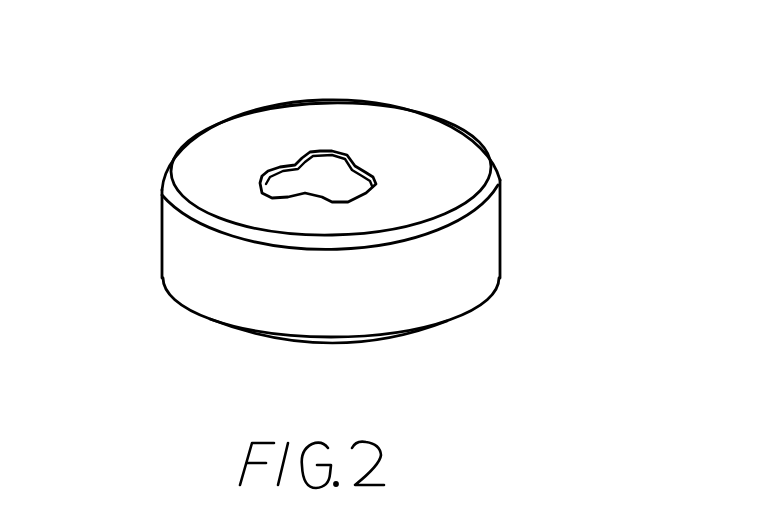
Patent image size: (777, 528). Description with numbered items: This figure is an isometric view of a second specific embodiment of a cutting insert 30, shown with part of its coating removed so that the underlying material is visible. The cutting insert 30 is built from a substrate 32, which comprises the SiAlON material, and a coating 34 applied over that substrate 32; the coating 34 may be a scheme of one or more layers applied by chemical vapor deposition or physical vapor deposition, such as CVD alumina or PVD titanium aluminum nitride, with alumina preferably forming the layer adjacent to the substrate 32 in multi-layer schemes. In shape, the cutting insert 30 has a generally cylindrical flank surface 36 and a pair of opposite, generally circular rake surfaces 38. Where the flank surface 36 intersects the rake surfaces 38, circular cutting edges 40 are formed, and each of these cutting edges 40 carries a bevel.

The cutting insert 30 is at (541, 110).
The substrate 32 is at (310, 178).
The coating 34 is at (328, 150).
The flank surface 36 is at (187, 265).
The rake surfaces 38 is at (452, 155).
The cutting edges 40 is at (173, 202).